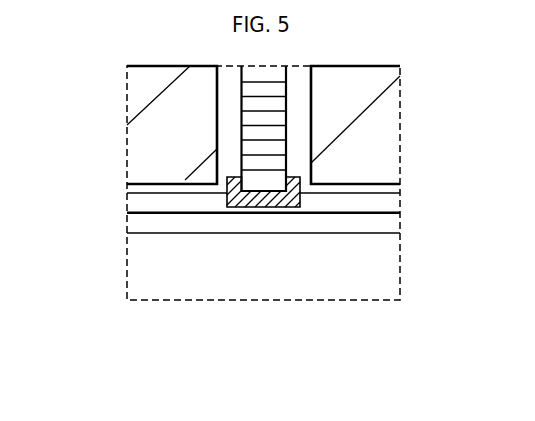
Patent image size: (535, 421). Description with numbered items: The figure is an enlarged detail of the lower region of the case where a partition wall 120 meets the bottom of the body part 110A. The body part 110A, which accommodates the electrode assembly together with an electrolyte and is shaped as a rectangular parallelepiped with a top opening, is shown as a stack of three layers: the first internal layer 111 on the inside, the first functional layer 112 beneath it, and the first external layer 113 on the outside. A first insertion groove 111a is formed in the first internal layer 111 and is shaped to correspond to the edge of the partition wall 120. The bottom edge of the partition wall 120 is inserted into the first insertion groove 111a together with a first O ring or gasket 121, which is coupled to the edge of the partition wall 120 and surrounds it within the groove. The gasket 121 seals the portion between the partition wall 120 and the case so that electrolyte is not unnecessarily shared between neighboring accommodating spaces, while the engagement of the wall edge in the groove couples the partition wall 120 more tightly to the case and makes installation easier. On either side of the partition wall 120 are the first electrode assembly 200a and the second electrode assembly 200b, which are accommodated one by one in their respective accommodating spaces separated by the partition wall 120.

The first electrode assembly 200a is at (147, 135).
The second electrode assembly 200b is at (380, 156).
The partition wall 120 is at (278, 102).
The first O ring or gasket 121 is at (302, 194).
The first insertion groove 111a is at (238, 198).
The first internal layer 111 is at (363, 205).
The first functional layer 112 is at (314, 213).
The first external layer 113 is at (268, 222).
The body part 110A is at (378, 351).